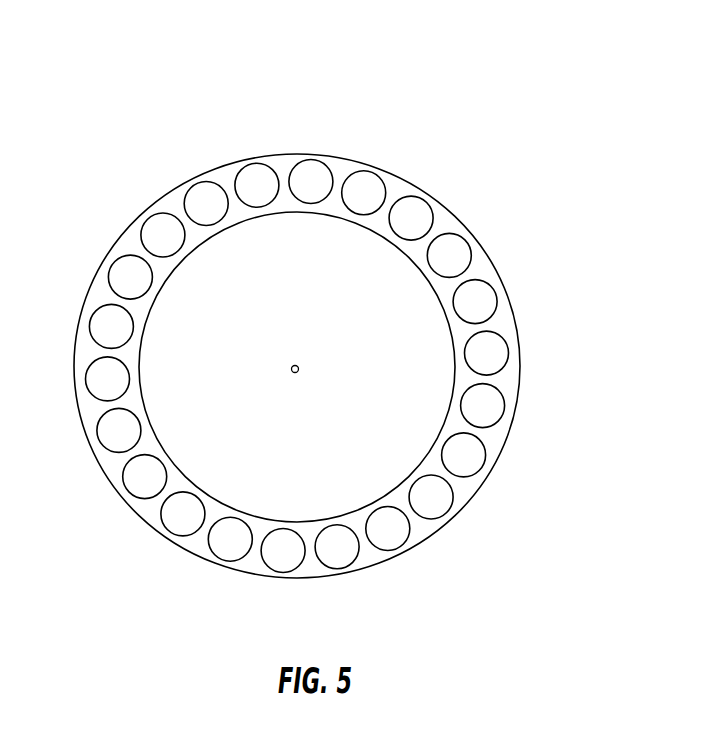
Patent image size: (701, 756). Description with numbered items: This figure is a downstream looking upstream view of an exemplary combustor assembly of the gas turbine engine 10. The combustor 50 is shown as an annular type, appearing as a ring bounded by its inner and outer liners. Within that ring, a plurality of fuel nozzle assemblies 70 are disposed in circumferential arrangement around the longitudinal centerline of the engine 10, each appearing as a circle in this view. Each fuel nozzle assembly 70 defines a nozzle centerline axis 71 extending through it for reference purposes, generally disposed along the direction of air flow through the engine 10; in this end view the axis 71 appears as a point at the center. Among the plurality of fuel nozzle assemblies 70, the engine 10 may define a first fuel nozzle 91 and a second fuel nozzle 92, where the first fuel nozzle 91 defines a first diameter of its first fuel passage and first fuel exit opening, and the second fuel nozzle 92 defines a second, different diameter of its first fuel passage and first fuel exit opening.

The engine 10 is at (341, 83).
The combustor 50 is at (265, 155).
The fuel nozzle assembly 70 is at (208, 192).
The nozzle centerline axis 71 is at (300, 352).
The first fuel nozzle 91 is at (317, 184).
The second fuel nozzle 92 is at (370, 194).